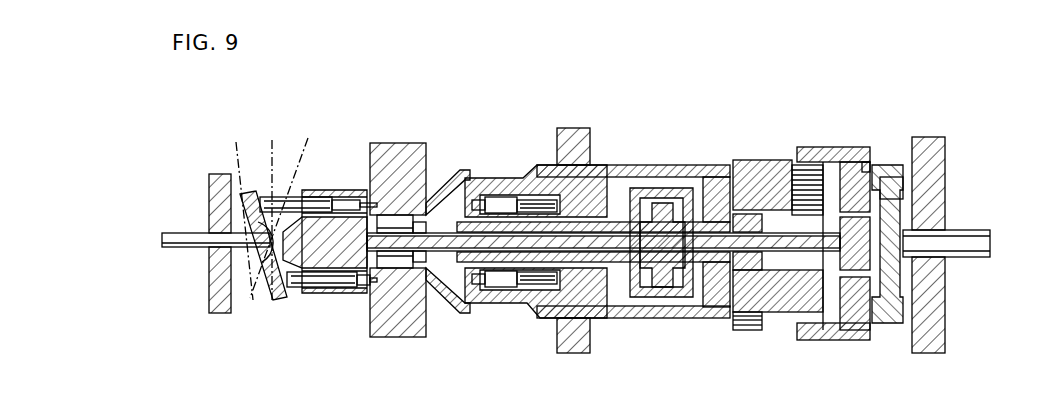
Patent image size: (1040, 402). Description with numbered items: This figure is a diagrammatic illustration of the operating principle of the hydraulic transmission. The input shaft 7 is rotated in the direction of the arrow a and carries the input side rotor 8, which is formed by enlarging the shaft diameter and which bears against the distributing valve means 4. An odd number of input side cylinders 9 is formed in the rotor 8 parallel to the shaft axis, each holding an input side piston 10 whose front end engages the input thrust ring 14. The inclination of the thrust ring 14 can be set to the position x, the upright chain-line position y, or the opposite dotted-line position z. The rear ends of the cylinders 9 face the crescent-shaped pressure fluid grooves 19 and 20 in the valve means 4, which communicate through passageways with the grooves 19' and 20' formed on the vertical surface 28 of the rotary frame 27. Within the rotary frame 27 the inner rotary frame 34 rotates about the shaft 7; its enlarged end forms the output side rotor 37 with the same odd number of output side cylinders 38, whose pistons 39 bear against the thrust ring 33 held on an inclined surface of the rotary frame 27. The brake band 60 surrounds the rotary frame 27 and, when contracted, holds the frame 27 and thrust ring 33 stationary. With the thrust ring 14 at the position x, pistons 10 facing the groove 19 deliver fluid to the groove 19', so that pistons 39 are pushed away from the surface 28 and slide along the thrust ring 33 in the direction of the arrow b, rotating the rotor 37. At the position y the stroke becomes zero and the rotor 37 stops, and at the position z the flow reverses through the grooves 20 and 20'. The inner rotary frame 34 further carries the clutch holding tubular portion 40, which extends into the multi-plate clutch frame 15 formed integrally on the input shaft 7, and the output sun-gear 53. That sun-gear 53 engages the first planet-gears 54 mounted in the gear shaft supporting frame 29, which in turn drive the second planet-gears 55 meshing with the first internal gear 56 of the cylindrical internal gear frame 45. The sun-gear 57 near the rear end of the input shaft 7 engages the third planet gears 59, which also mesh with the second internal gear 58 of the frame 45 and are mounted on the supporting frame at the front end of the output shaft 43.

The input shaft 7 is at (186, 249).
The arrow a is at (181, 257).
The input thrust ring 14 is at (272, 298).
The position x is at (239, 211).
The position y is at (267, 210).
The position z is at (279, 210).
The input side rotor 8 is at (312, 195).
The input side piston 10 is at (287, 200).
The input side cylinder 9 is at (345, 190).
The distributing valve means 4 is at (402, 305).
The pressure fluid groove 19 is at (404, 163).
The pressure fluid groove 20 is at (382, 302).
The pressure fluid groove 19' is at (452, 165).
The vertical surface 28 is at (478, 265).
The pressure fluid groove 20' is at (462, 318).
The rotary frame 27 is at (527, 177).
The output side rotor 37 is at (500, 196).
The inner rotary frame 34 is at (614, 225).
The output side piston 39 is at (552, 308).
The output side cylinder 38 is at (498, 288).
The thrust ring 33 is at (588, 275).
The brake band 60 is at (584, 140).
The clutch holding tubular portion 40 is at (645, 213).
The multi-plate clutch frame 15 is at (667, 208).
The gear shaft supporting frame 29 is at (717, 176).
The arrow b is at (713, 303).
The output sun-gear 53 is at (748, 208).
The first planet-gear 54 is at (746, 330).
The first internal gear 56 is at (807, 170).
The second planet-gear 55 is at (808, 187).
The second internal gear 58 is at (860, 158).
The third planet gear 59 is at (872, 166).
The sun-gear 57 is at (887, 190).
The cylindrical internal gear frame 45 is at (900, 200).
The output shaft 43 is at (978, 232).